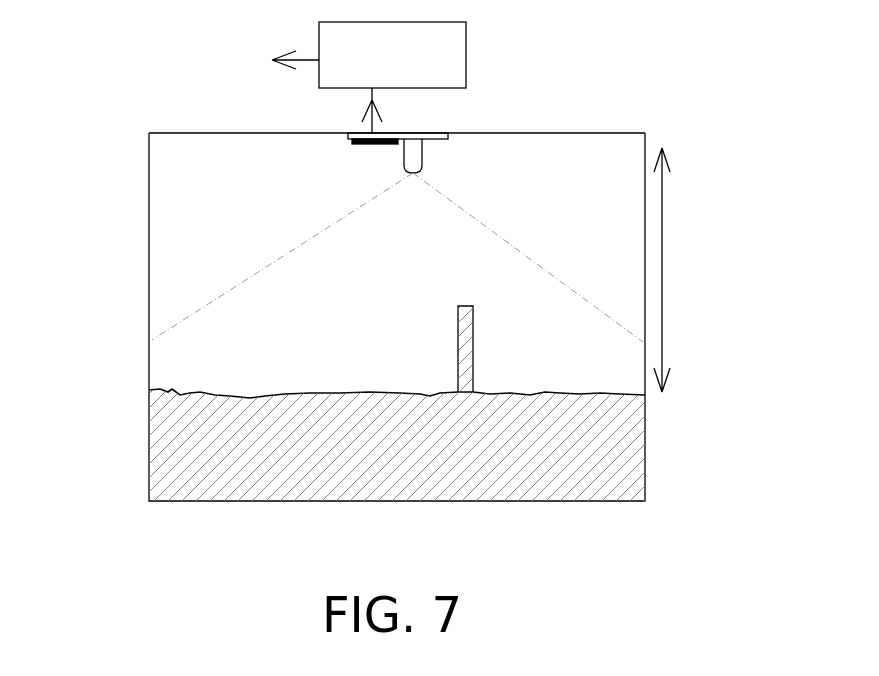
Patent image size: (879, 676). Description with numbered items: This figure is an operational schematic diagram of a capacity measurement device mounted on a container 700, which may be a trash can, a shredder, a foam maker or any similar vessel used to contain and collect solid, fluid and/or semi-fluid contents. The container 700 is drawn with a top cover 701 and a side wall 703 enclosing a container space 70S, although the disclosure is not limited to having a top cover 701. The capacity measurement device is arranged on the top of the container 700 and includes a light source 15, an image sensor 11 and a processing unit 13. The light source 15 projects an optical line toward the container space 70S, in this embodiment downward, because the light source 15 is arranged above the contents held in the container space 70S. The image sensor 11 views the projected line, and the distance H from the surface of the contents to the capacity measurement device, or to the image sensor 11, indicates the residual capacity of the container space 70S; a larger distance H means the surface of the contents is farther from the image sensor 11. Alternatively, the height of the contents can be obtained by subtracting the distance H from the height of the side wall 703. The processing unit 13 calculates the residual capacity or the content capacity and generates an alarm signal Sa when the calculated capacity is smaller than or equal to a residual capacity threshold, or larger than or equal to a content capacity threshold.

The container 700 is at (100, 76).
The top cover 701 is at (608, 133).
The side wall 703 is at (148, 213).
The container space 70S is at (193, 166).
The image sensor 11 is at (348, 143).
The processing unit 13 is at (466, 58).
The light source 15 is at (423, 153).
The distance H is at (672, 270).
The alarm signal Sa is at (275, 59).
The element contents is at (638, 450).